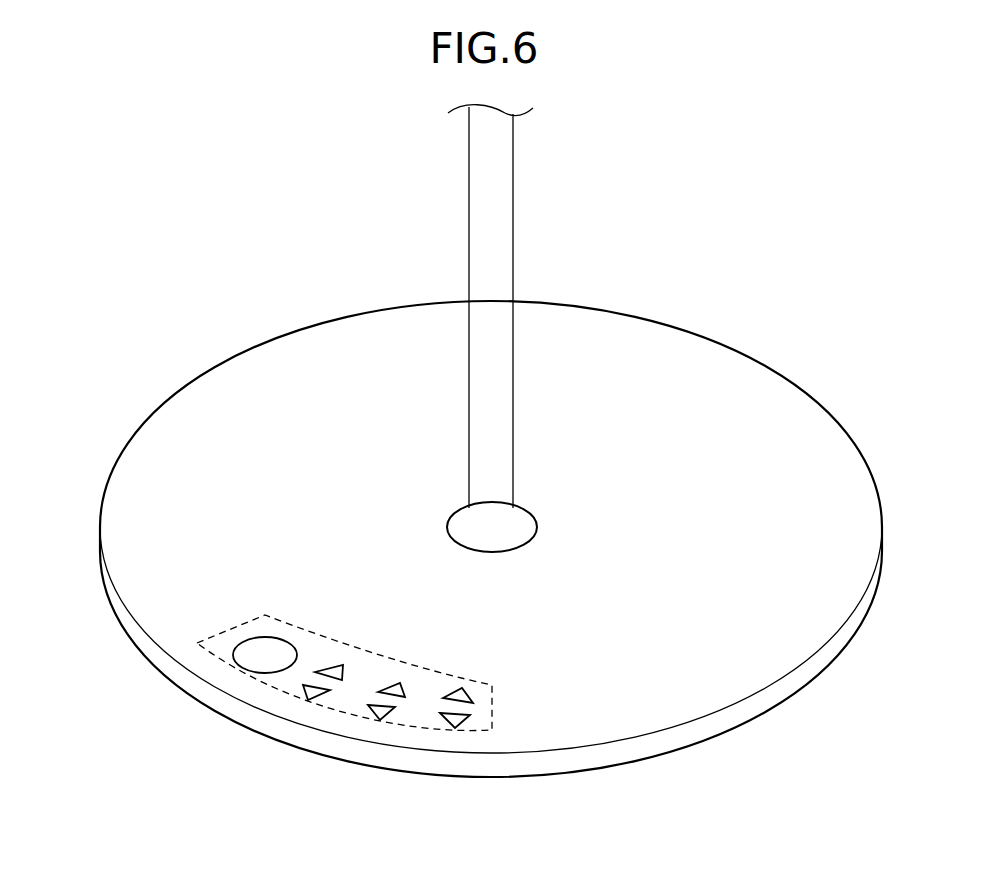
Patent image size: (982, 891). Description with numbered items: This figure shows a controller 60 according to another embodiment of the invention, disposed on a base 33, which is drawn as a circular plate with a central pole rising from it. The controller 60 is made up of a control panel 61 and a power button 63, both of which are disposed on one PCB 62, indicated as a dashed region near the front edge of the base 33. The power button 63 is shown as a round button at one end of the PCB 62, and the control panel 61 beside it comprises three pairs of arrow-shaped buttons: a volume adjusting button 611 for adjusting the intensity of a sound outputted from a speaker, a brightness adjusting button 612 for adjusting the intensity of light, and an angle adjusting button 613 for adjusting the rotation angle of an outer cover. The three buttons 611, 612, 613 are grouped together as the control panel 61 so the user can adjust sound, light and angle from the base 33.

The base 33 is at (258, 367).
The controller 60 is at (512, 667).
The control panel 61 is at (381, 766).
The volume adjusting button 611 is at (307, 688).
The brightness adjusting button 612 is at (377, 710).
The angle adjusting button 613 is at (439, 762).
The PCB 62 is at (218, 636).
The power button 63 is at (255, 657).